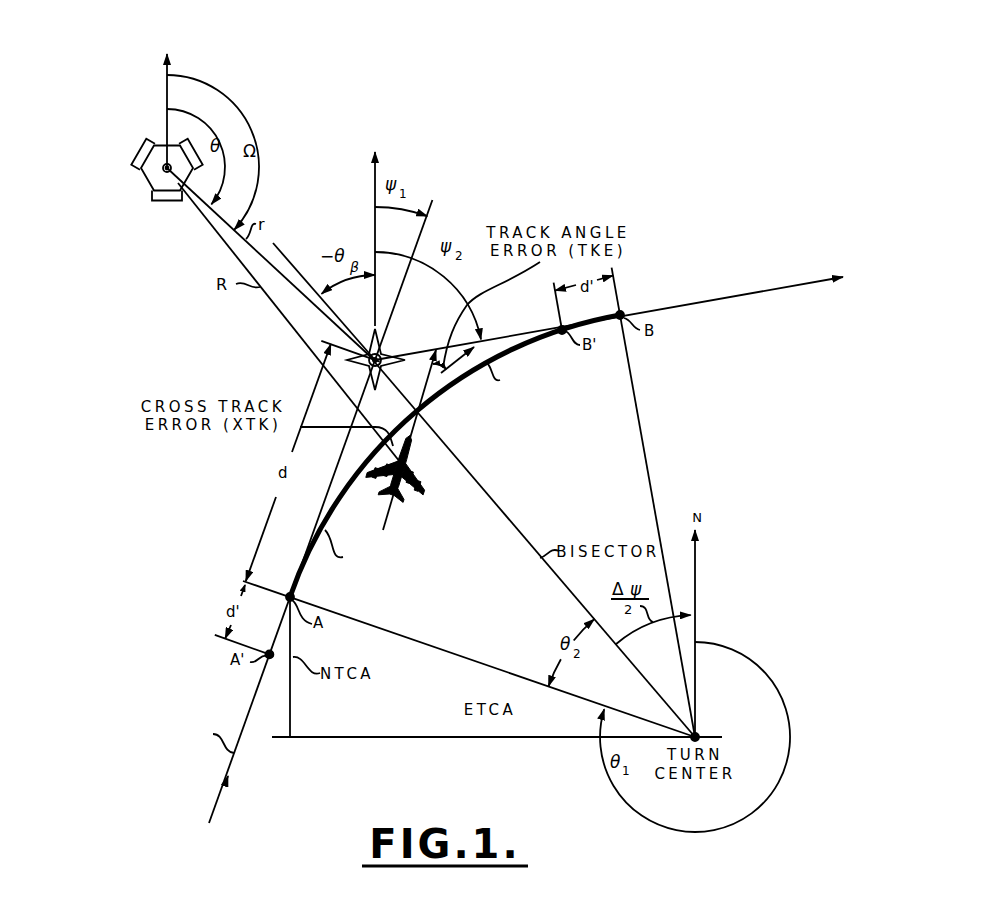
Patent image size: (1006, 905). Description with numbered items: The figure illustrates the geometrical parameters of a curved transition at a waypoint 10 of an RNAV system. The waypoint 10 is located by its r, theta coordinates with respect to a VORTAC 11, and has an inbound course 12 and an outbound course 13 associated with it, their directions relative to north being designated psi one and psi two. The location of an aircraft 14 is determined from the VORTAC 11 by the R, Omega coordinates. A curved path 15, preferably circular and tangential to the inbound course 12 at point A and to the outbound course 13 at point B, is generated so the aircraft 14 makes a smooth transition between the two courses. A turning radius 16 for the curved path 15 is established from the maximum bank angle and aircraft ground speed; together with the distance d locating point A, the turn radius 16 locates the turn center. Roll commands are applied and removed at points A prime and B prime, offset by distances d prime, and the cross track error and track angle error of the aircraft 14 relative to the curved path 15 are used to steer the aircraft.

The waypoint 10 is at (382, 352).
The VORTAC 11 is at (142, 178).
The inbound course 12 is at (247, 723).
The outbound course 13 is at (760, 291).
The aircraft 14 is at (433, 492).
The curved path 15 is at (532, 341).
The turning radius 16 is at (625, 340).